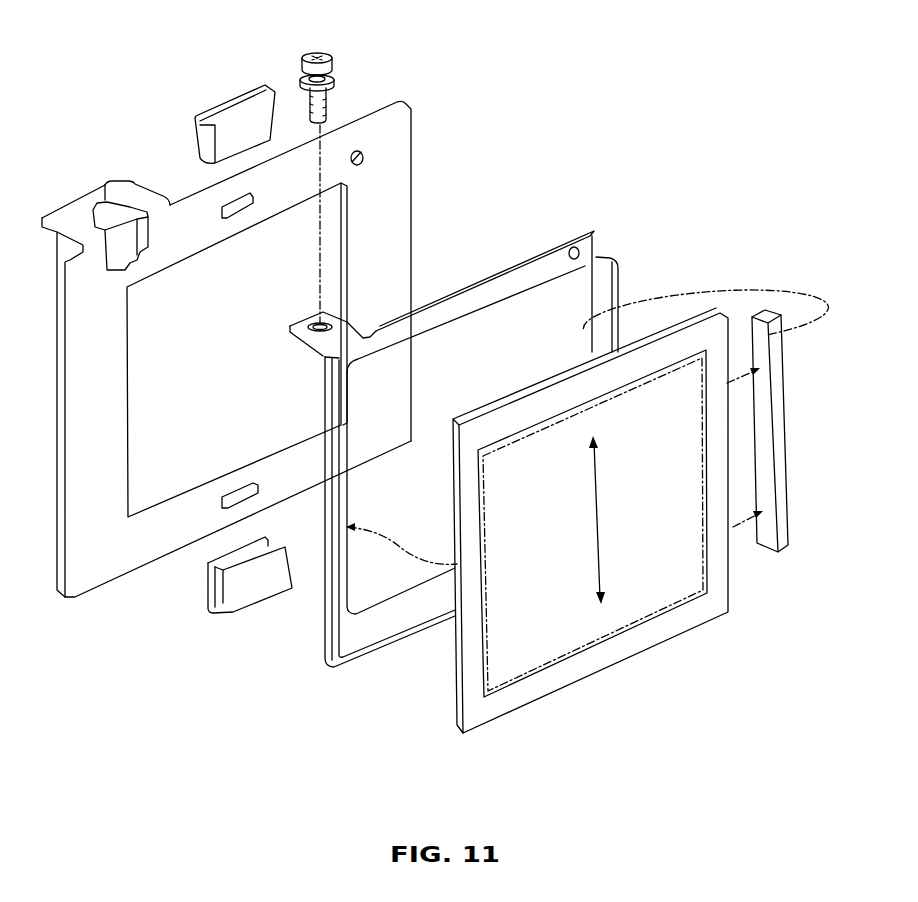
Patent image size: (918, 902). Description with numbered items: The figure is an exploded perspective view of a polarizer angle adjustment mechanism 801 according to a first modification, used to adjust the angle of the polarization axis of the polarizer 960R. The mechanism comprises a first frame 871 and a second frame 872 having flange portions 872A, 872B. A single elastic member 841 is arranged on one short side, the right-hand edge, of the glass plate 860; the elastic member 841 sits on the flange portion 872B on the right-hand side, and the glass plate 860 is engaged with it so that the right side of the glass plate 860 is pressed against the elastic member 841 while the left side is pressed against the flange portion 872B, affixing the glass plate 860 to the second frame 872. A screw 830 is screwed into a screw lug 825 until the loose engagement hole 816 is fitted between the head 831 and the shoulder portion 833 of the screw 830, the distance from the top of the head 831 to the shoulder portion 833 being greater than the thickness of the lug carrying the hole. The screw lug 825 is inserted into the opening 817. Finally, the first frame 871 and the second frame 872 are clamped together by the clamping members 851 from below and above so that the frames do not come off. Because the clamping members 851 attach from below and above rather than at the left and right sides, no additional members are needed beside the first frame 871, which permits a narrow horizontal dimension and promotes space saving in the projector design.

The polarizer angle adjustment mechanism 801 is at (724, 130).
The loose engagement hole 816 is at (107, 193).
The locking opening 817 is at (131, 247).
The screw lug 825 is at (297, 335).
The screw 830 is at (320, 167).
The head 831 is at (333, 63).
The shoulder portion 833 is at (334, 90).
The elastic member 841 is at (780, 433).
The clamping member 851 is at (230, 107).
The glass plate 860 is at (622, 494).
The first frame 871 is at (397, 230).
The second frame 872 is at (470, 420).
The flange portion 872A is at (447, 270).
The flange portion 872B is at (603, 283).
The polarizer 960R is at (680, 573).